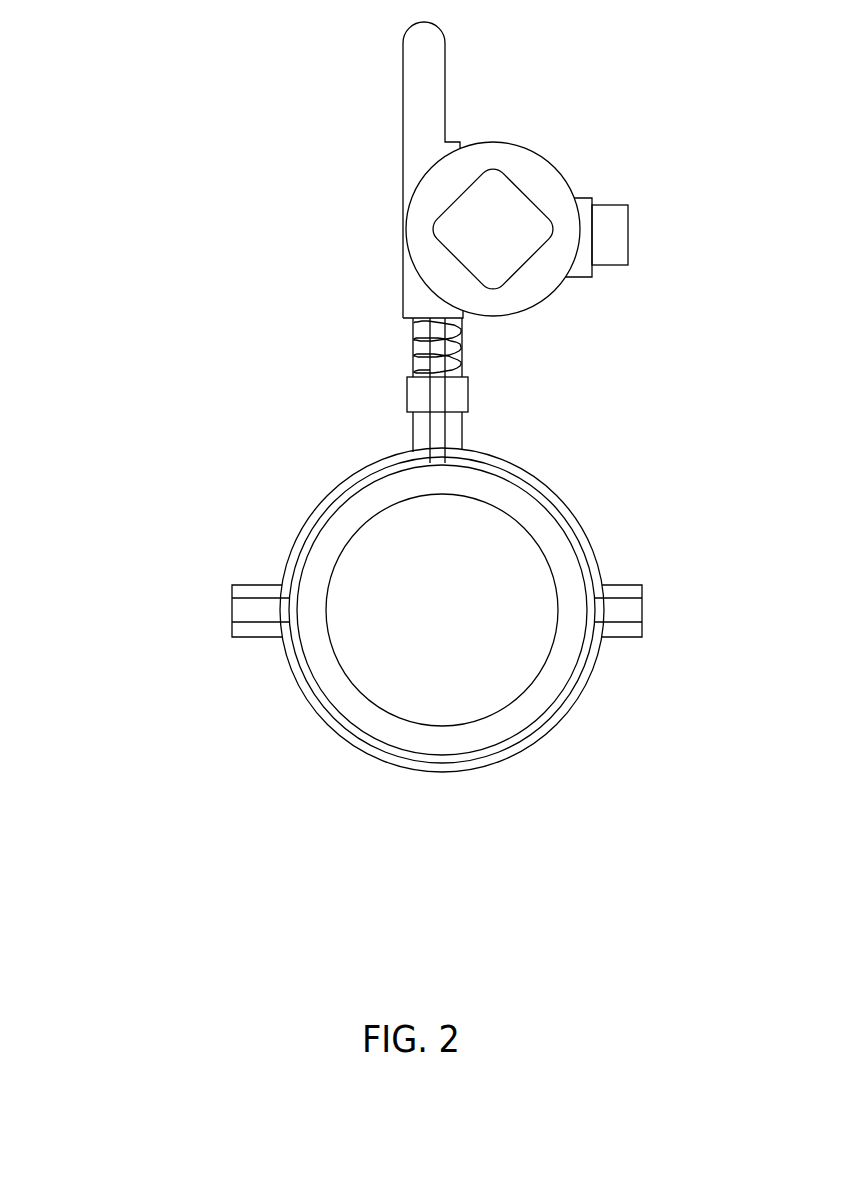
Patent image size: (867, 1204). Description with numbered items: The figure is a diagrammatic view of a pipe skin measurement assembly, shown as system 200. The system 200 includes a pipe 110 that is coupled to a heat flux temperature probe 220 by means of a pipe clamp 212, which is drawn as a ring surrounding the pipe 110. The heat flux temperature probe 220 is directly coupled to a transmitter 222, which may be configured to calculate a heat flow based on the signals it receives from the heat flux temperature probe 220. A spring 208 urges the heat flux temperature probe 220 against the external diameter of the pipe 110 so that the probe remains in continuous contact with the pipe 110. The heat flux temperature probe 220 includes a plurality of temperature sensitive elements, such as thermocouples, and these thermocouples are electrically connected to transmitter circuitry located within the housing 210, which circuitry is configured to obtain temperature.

The system 200 is at (184, 164).
The housing 210 is at (513, 145).
The transmitter 222 is at (551, 156).
The spring 208 is at (462, 352).
The heat flux temperature probe 220 is at (422, 427).
The pipe clamp 212 is at (559, 486).
The pipe 110 is at (300, 550).